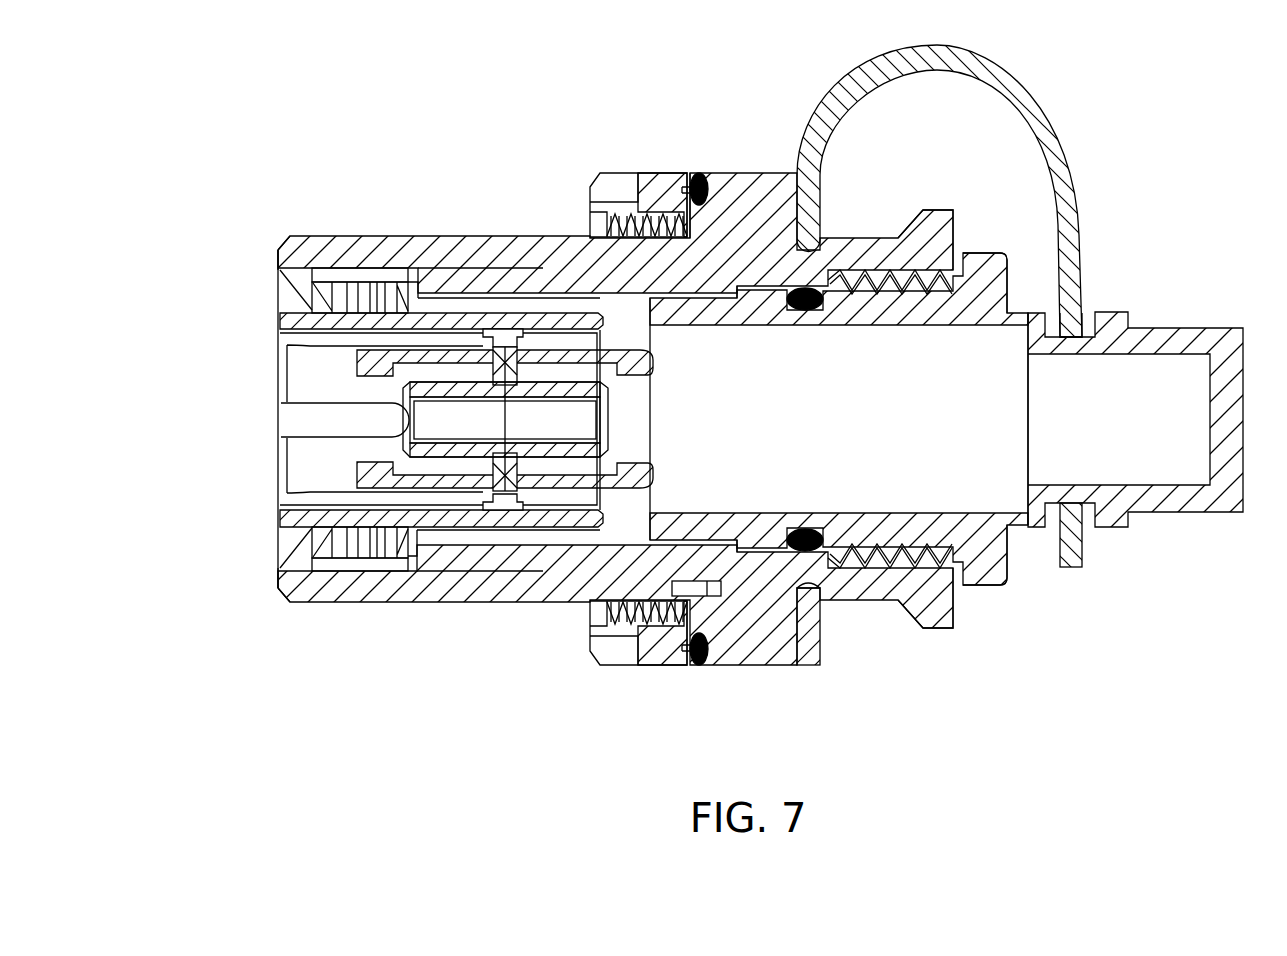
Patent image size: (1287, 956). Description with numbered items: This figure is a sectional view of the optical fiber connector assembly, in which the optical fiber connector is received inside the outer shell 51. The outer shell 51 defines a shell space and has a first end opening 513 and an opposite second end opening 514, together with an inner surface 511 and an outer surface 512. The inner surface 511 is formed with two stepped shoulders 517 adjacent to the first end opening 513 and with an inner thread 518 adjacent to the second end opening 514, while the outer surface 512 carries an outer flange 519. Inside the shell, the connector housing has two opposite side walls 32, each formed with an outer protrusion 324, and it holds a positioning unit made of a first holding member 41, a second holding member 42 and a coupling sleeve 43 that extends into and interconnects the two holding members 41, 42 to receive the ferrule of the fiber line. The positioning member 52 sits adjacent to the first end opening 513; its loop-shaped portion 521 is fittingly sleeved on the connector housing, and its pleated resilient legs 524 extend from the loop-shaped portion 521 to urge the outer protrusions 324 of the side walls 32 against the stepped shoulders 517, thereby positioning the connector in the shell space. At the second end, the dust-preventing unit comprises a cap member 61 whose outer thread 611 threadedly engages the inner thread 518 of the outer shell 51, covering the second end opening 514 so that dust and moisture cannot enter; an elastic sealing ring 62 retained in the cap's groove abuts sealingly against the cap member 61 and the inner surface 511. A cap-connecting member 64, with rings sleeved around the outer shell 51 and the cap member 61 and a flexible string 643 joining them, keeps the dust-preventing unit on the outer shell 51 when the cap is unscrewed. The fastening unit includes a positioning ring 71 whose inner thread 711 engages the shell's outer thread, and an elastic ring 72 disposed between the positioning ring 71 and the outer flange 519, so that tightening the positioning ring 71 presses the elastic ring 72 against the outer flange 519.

The side walls 32 is at (500, 293).
The outer protrusion 324 is at (455, 298).
The first holding member 41 is at (680, 460).
The second holding member 42 is at (320, 375).
The coupling sleeve 43 is at (557, 457).
The outer shell 51 is at (870, 620).
The inner surface 511 is at (715, 293).
The outer surface 512 is at (553, 236).
The first end opening 513 is at (275, 257).
The second end opening 514 is at (985, 585).
The stepped shoulders 517 is at (403, 268).
The inner thread 518 is at (928, 276).
The outer flange 519 is at (772, 172).
The positioning member 52 is at (218, 598).
The loop-shaped portion 521 is at (278, 540).
The resilient legs 524 is at (357, 281).
The cap member 61 is at (1220, 328).
The outer thread 611 is at (900, 276).
The elastic sealing ring 62 is at (800, 556).
The cap-connecting member 64 is at (1072, 106).
The flexible string 643 is at (1080, 212).
The positioning ring 71 is at (662, 172).
The inner thread 711 is at (620, 238).
The elastic ring 72 is at (697, 172).